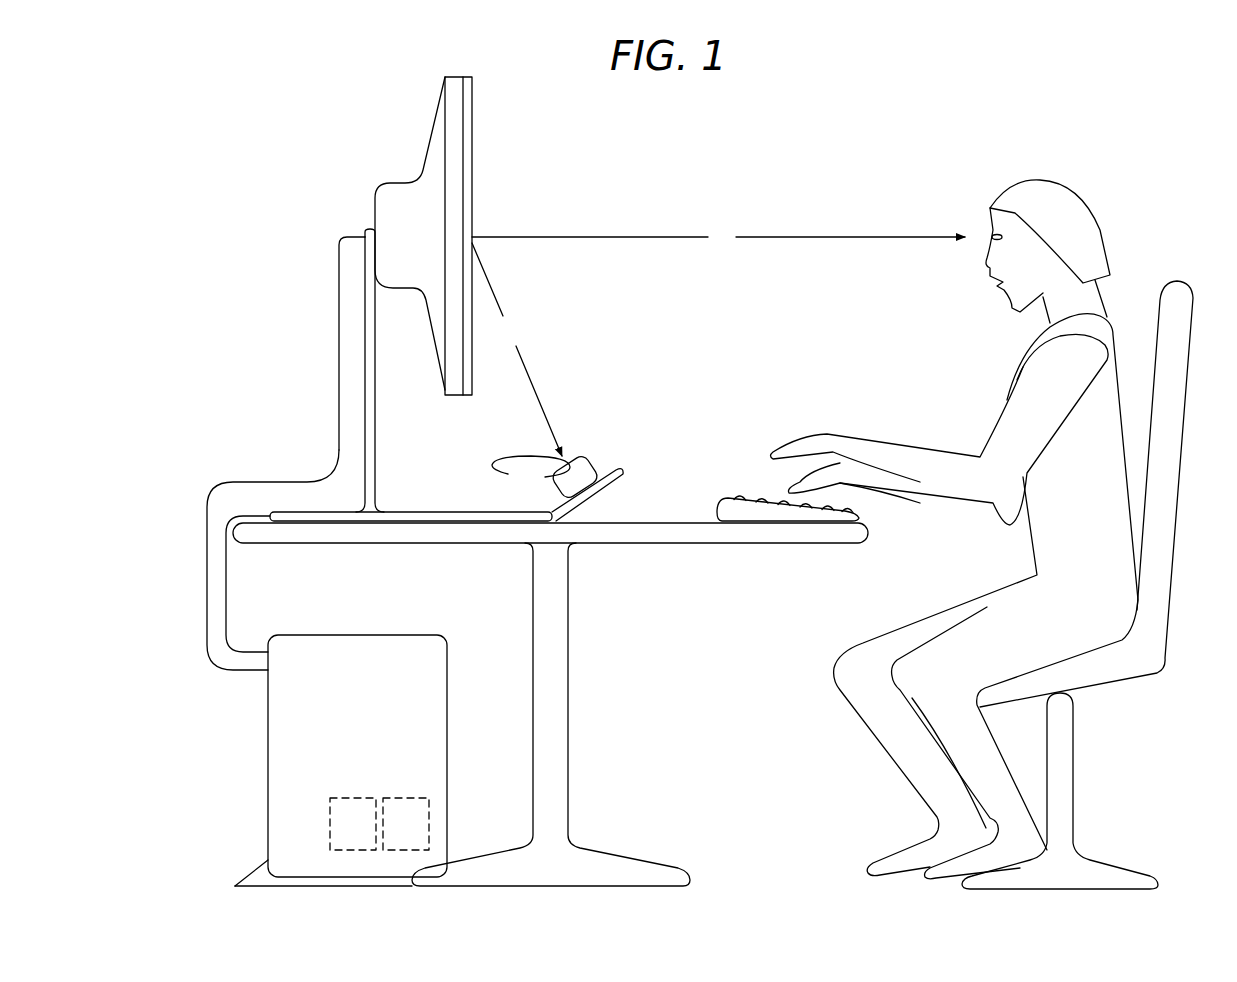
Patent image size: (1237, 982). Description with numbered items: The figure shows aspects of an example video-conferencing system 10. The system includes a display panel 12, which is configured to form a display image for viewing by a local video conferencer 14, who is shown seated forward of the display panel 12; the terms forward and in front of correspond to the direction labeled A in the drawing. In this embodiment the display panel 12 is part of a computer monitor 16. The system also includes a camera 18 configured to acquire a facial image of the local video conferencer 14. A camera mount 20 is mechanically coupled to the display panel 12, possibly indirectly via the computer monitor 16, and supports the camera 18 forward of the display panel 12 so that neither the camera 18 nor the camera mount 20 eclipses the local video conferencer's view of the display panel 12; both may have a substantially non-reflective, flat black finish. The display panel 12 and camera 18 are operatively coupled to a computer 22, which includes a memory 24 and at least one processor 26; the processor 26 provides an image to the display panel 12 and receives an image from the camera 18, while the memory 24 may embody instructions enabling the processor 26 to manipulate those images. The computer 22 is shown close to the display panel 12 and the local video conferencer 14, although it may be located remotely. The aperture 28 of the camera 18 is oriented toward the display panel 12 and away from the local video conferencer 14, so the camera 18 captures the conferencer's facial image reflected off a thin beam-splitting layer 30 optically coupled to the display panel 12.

The video-conferencing system 10 is at (240, 182).
The display panel 12 is at (456, 76).
The local video conferencer 14 is at (1112, 185).
The computer monitor 16 is at (380, 130).
The camera 18 is at (598, 457).
The camera mount 20 is at (455, 510).
The computer 22 is at (369, 766).
The memory 24 is at (365, 835).
The processor 26 is at (418, 835).
The aperture 28 is at (531, 475).
The beam-splitting layer 30 is at (474, 148).